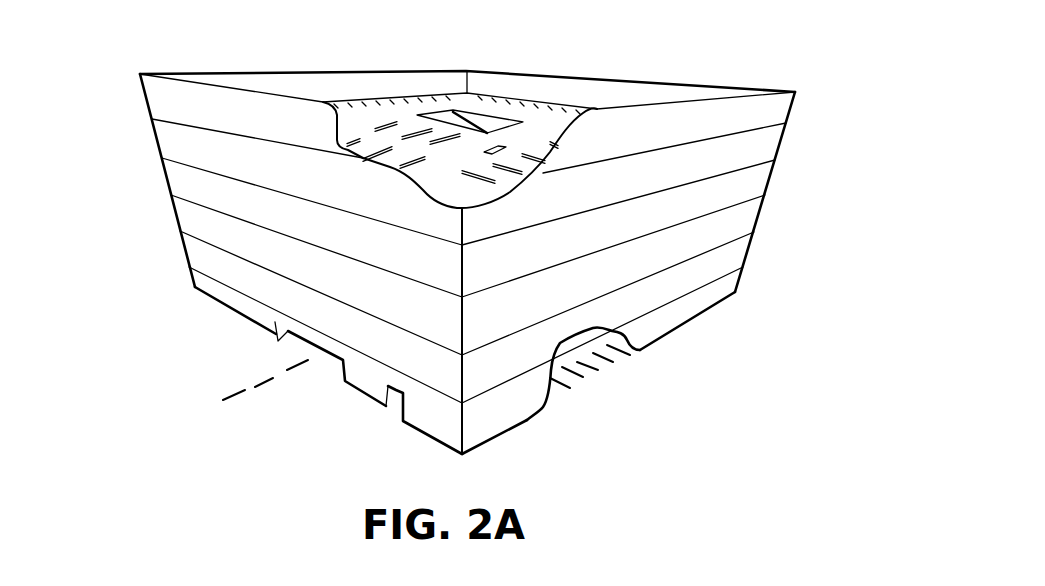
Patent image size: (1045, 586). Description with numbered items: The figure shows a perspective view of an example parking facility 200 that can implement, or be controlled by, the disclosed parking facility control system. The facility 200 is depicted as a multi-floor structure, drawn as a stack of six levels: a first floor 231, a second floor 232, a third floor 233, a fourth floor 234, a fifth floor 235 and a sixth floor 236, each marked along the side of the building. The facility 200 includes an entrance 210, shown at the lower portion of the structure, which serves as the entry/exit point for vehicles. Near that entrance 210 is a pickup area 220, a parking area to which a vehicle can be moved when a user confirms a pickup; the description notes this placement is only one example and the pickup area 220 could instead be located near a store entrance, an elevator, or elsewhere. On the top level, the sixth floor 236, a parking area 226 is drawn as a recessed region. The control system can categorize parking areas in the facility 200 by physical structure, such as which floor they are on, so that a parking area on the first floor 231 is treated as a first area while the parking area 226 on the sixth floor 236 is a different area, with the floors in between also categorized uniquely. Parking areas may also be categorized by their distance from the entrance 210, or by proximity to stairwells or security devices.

The parking facility 200 is at (805, 117).
The entrance 210 is at (295, 341).
The pickup area 220 is at (606, 364).
The parking area 226 is at (508, 84).
The first floor 231 is at (188, 280).
The second floor 232 is at (180, 247).
The third floor 233 is at (172, 213).
The fourth floor 234 is at (163, 175).
The fifth floor 235 is at (156, 137).
The sixth floor 236 is at (146, 96).